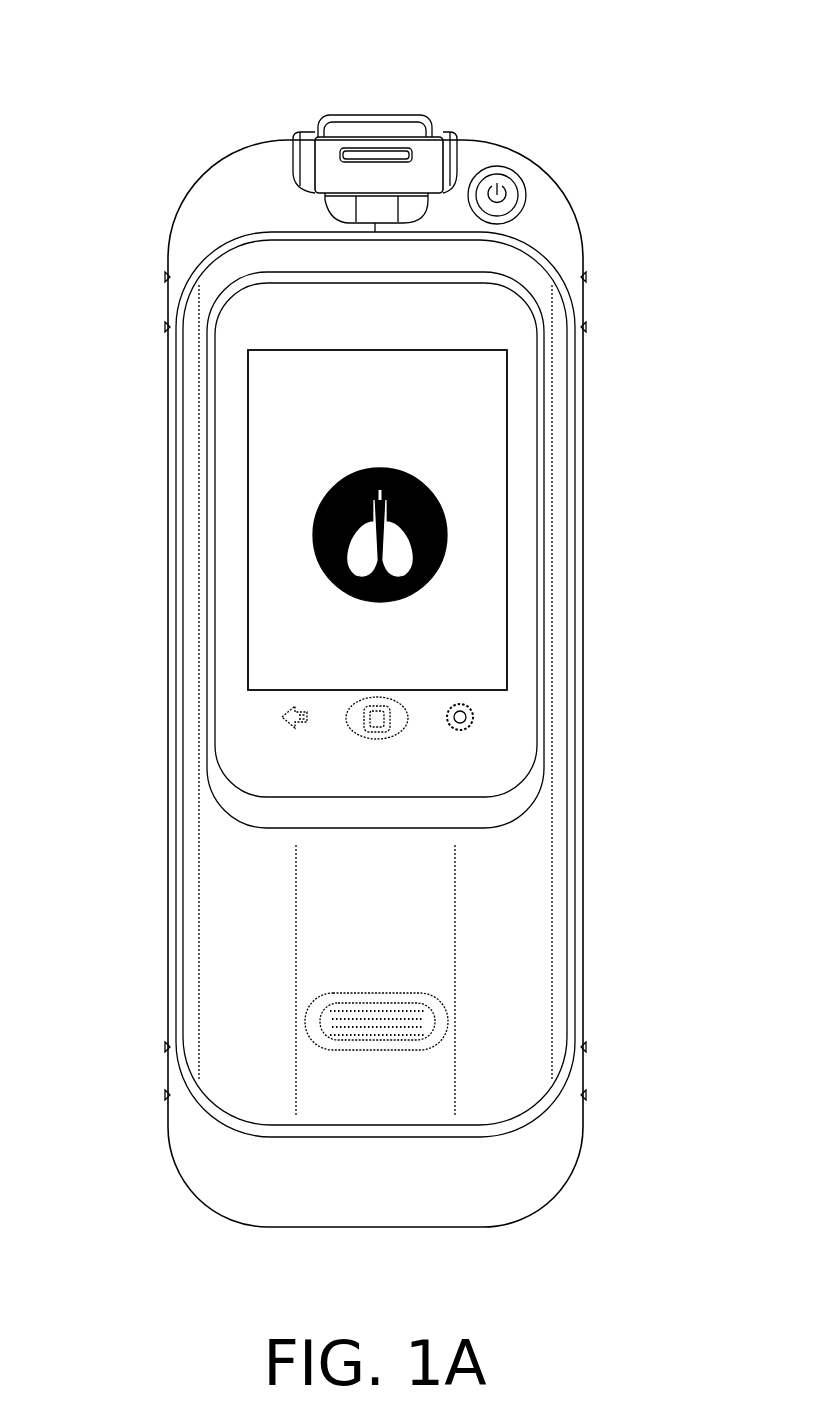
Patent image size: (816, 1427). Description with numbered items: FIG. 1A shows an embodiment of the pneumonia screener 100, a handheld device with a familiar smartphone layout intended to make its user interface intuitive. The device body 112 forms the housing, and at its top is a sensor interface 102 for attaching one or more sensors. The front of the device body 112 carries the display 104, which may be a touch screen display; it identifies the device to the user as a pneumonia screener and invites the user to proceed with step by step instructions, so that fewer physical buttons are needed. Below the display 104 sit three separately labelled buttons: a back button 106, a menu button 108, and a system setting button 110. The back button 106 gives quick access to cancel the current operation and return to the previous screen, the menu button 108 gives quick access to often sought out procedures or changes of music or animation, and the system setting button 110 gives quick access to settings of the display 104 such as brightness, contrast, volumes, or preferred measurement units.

The pneumonia screener 100 is at (121, 45).
The sensor interface 102 is at (378, 112).
The display 104 is at (482, 502).
The back button 106 is at (278, 713).
The menu button 108 is at (355, 697).
The system setting button 110 is at (478, 708).
The device body 112 is at (199, 195).